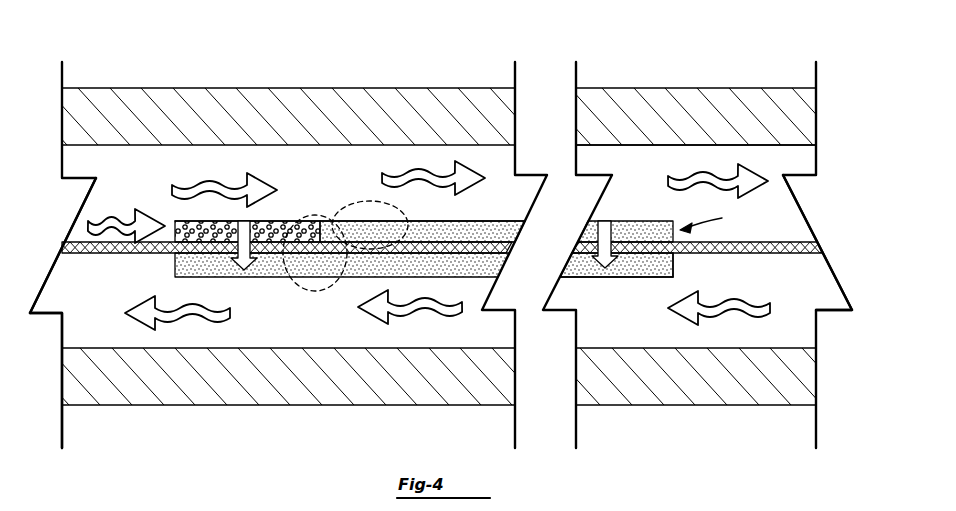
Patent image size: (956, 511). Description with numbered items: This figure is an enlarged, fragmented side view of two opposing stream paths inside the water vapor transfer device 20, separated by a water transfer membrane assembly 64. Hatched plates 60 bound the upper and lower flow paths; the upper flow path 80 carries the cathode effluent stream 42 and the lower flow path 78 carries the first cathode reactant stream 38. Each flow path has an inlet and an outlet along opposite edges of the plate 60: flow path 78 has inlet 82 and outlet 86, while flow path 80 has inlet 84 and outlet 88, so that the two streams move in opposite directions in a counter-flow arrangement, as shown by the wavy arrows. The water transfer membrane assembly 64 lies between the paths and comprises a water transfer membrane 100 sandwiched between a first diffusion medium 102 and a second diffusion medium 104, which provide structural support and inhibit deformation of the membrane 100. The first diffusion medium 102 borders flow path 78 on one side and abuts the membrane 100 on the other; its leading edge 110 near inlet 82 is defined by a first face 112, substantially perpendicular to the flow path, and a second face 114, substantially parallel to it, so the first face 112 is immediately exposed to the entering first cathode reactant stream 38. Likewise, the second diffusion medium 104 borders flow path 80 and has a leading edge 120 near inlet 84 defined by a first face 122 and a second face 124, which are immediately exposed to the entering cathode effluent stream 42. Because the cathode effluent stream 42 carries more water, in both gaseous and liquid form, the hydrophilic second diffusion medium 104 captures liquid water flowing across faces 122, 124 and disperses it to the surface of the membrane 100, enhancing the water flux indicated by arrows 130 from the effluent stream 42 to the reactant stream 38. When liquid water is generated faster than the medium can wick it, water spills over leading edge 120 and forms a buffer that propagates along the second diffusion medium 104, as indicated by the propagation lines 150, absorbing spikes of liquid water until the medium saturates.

The water vapor transfer device 20 is at (753, 57).
The plate 60 is at (818, 112).
The outlet 88 is at (818, 157).
The inlet 84 is at (70, 236).
The outlet 86 is at (40, 296).
The inlet 82 is at (843, 300).
The water transfer membrane 100 is at (820, 248).
The leading edge 120 is at (175, 222).
The second face 124 is at (225, 220).
The first face 122 is at (160, 253).
The second diffusion medium 104 is at (631, 220).
The first face 112 is at (673, 270).
The first diffusion medium 102 is at (573, 266).
The second face 114 is at (617, 278).
The leading edge 110 is at (672, 279).
The water flux arrows 130 is at (247, 262).
The propagation lines 150 is at (345, 247).
The cathode effluent stream 42 is at (113, 214).
The first cathode reactant stream 38 is at (422, 300).
The water transfer membrane assembly 64 is at (711, 216).
The flow path 80 is at (327, 197).
The flow path 78 is at (336, 336).